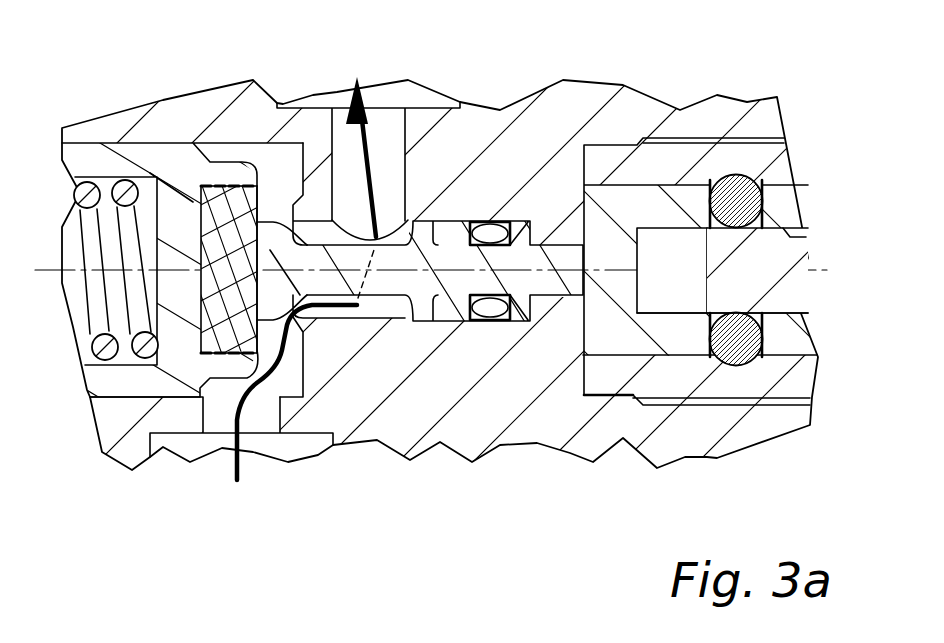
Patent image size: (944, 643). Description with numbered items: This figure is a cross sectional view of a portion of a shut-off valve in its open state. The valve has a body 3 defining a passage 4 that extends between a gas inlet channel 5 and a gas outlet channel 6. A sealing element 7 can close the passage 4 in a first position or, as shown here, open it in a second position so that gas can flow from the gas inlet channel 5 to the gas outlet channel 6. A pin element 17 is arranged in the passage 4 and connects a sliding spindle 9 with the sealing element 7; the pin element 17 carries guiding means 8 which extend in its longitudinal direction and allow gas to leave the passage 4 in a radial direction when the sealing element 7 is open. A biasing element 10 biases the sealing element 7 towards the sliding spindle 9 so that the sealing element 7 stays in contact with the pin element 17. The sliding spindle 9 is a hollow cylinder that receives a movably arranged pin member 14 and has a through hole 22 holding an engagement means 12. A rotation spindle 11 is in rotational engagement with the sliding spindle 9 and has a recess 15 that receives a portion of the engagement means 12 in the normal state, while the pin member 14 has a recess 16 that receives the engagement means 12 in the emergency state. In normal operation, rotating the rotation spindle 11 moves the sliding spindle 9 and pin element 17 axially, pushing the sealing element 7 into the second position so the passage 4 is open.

The body 3 is at (530, 393).
The passage 4 is at (280, 177).
The gas inlet channel 5 is at (263, 417).
The gas outlet channel 6 is at (387, 140).
The sealing element 7 is at (232, 223).
The guiding means 8 is at (387, 307).
The sliding spindle 9 is at (652, 213).
The biasing element 10 is at (123, 177).
The rotation spindle 11 is at (600, 167).
The engagement means 12 is at (760, 183).
The pin member 14 is at (760, 290).
The recess 15 is at (733, 177).
The recess 16 is at (792, 230).
The pin element 17 is at (420, 278).
The through hole 22 is at (760, 220).